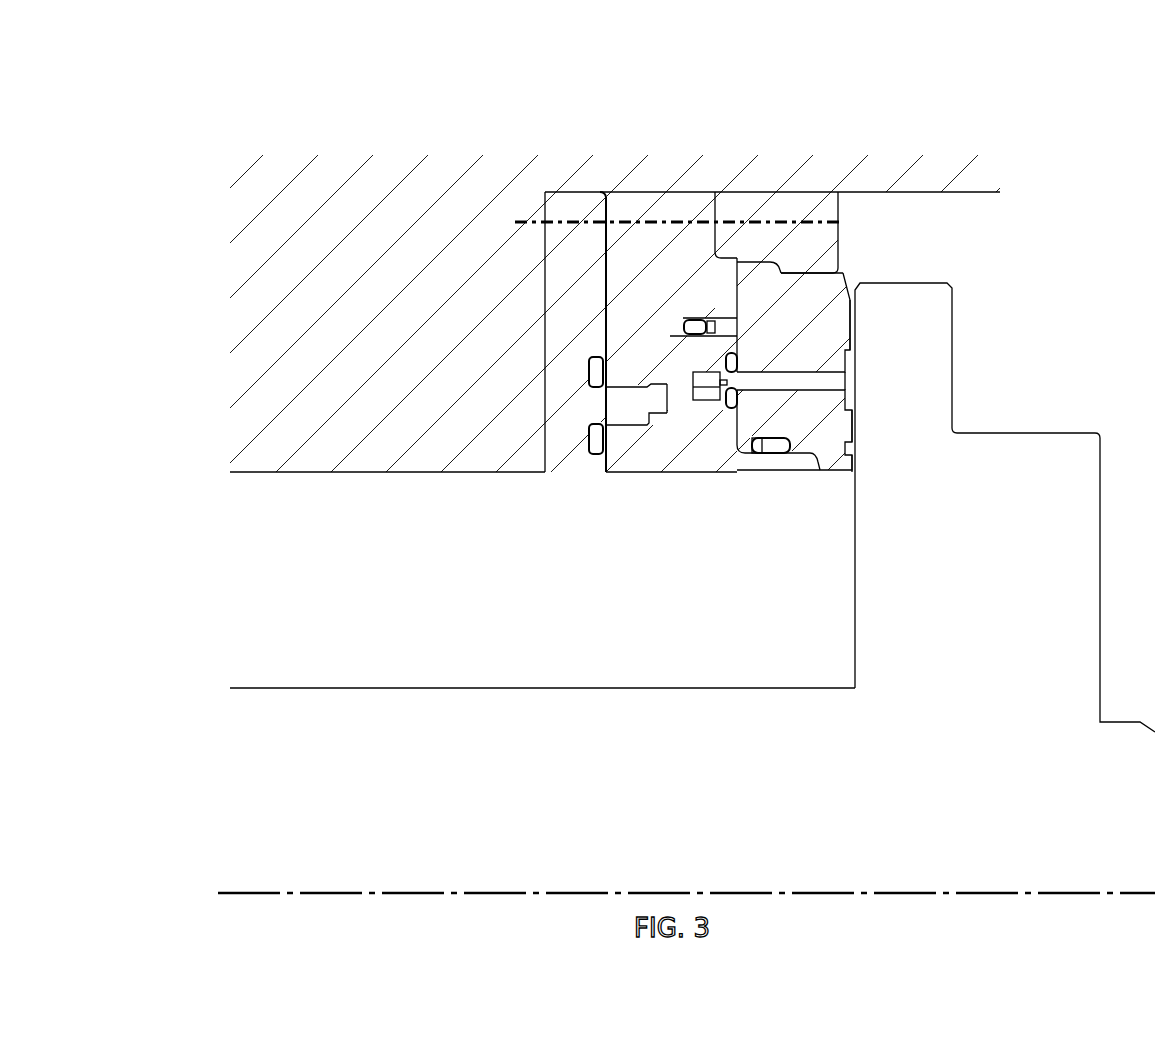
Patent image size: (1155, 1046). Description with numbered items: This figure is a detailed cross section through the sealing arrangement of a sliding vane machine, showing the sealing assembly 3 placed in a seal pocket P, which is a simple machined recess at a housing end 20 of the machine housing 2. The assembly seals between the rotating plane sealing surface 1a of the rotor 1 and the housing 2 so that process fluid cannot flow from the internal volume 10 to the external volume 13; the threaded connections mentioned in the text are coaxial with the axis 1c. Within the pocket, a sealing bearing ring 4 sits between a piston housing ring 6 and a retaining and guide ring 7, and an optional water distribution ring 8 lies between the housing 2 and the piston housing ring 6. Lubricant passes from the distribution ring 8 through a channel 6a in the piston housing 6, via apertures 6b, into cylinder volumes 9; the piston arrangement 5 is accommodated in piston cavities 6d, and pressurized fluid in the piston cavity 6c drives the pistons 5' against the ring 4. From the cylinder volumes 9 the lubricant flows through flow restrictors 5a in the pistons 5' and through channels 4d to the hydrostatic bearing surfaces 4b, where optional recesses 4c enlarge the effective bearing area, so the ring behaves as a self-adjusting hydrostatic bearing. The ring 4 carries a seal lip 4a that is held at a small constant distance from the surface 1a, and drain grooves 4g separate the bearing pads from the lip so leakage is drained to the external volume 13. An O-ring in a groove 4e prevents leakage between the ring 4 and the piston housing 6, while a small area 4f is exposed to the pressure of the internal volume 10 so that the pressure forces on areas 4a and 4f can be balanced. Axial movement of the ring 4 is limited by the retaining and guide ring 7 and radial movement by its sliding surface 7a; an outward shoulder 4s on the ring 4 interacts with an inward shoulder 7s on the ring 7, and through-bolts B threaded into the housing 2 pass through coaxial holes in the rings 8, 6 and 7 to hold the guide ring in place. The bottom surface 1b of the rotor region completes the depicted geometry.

The rotor 1 is at (1047, 597).
The sealing surface 1a is at (859, 532).
The housing bottom surface 1b is at (495, 688).
The axis 1c is at (635, 890).
The machine housing 2 is at (435, 190).
The sealing assembly 3 is at (759, 183).
The sealing bearing ring 4 is at (830, 312).
The seal lip 4a is at (859, 459).
The hydrostatic bearing surface 4b is at (855, 336).
The recess 4c is at (851, 381).
The lubrication conduit 4d is at (758, 382).
The groove 4e is at (772, 442).
The area 4f is at (813, 463).
The drain groove 4g is at (860, 442).
The shoulder 4s is at (755, 272).
The piston arrangement 5 is at (652, 455).
The piston 5' is at (651, 475).
The flow restrictor 5a is at (720, 385).
The piston housing ring 6 is at (650, 208).
The channel 6a is at (613, 415).
The apertures 6b is at (659, 403).
The piston cavity 6c is at (710, 189).
The piston cavity 6d is at (670, 332).
The retaining and guide ring 7 is at (830, 212).
The sliding surface 7a is at (828, 270).
The shoulder 7s is at (787, 263).
The fluid distribution ring 8 is at (575, 205).
The cylinder volume 9 is at (668, 422).
The internal volume 10 is at (542, 580).
The external volume 13 is at (1055, 314).
The housing end 20 is at (483, 408).
The through-bolt B is at (783, 225).
The seal pocket P is at (868, 221).